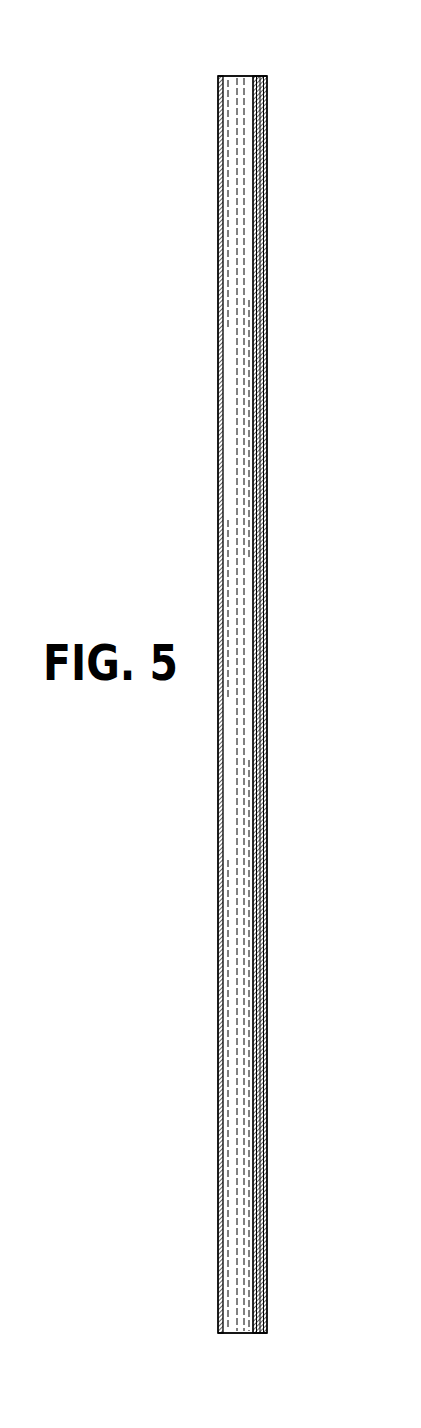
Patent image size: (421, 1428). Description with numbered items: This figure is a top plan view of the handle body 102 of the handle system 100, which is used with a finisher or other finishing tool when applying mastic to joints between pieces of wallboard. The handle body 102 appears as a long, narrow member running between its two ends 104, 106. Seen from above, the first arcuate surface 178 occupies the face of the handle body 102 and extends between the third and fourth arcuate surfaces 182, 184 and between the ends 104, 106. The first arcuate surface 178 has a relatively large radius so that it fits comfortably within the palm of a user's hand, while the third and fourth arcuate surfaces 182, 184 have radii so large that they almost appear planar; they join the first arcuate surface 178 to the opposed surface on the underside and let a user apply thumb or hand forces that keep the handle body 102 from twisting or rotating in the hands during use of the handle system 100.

The handle system 100 is at (220, 679).
The handle body 102 is at (172, 376).
The end 104 is at (271, 1327).
The end 106 is at (273, 71).
The first arcuate surface 178 is at (240, 783).
The third arcuate surface 182 is at (267, 503).
The fourth arcuate surface 184 is at (220, 989).